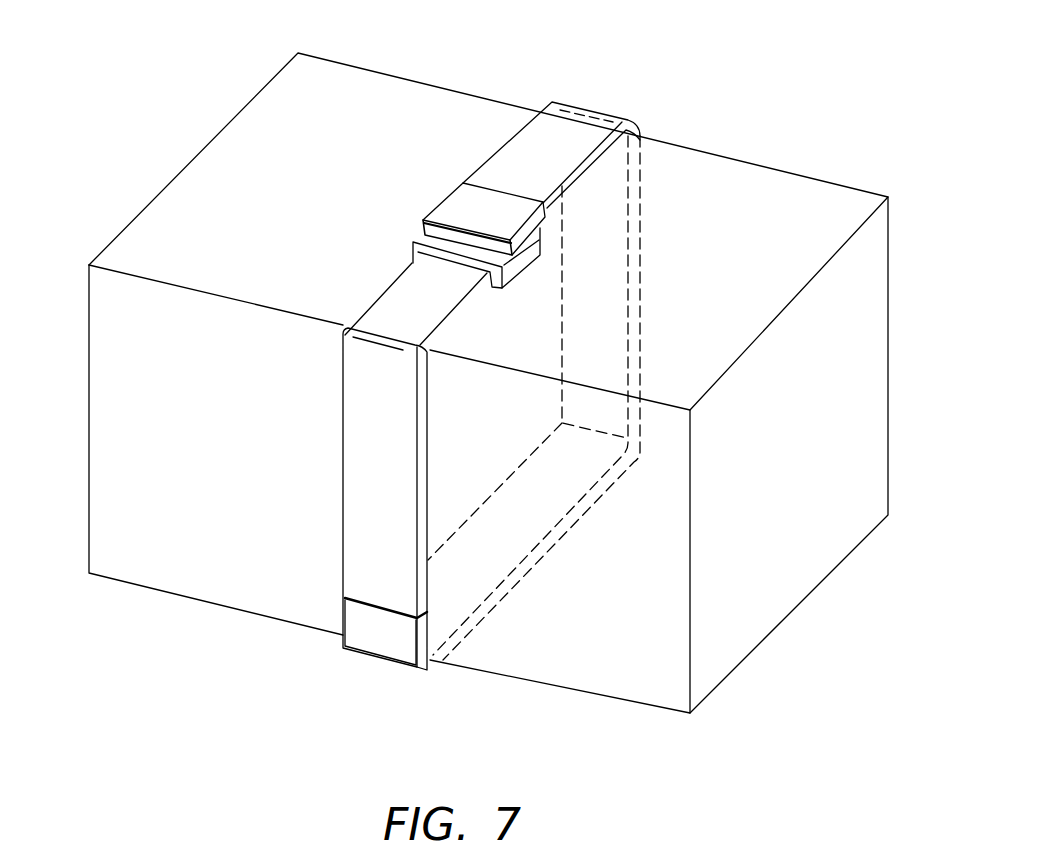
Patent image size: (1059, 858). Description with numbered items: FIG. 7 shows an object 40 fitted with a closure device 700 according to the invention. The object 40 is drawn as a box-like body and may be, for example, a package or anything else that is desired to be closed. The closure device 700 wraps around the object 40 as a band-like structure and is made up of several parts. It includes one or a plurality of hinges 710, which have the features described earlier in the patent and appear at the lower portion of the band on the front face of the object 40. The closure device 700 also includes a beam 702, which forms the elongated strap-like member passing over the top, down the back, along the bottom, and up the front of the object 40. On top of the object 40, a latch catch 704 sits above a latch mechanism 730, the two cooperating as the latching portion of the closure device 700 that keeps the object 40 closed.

The object 40 is at (153, 367).
The closure device 700 is at (471, 362).
The beam 702 is at (370, 533).
The latch catch 704 is at (447, 203).
The hinge 710 is at (393, 643).
The latch mechanism 730 is at (413, 244).